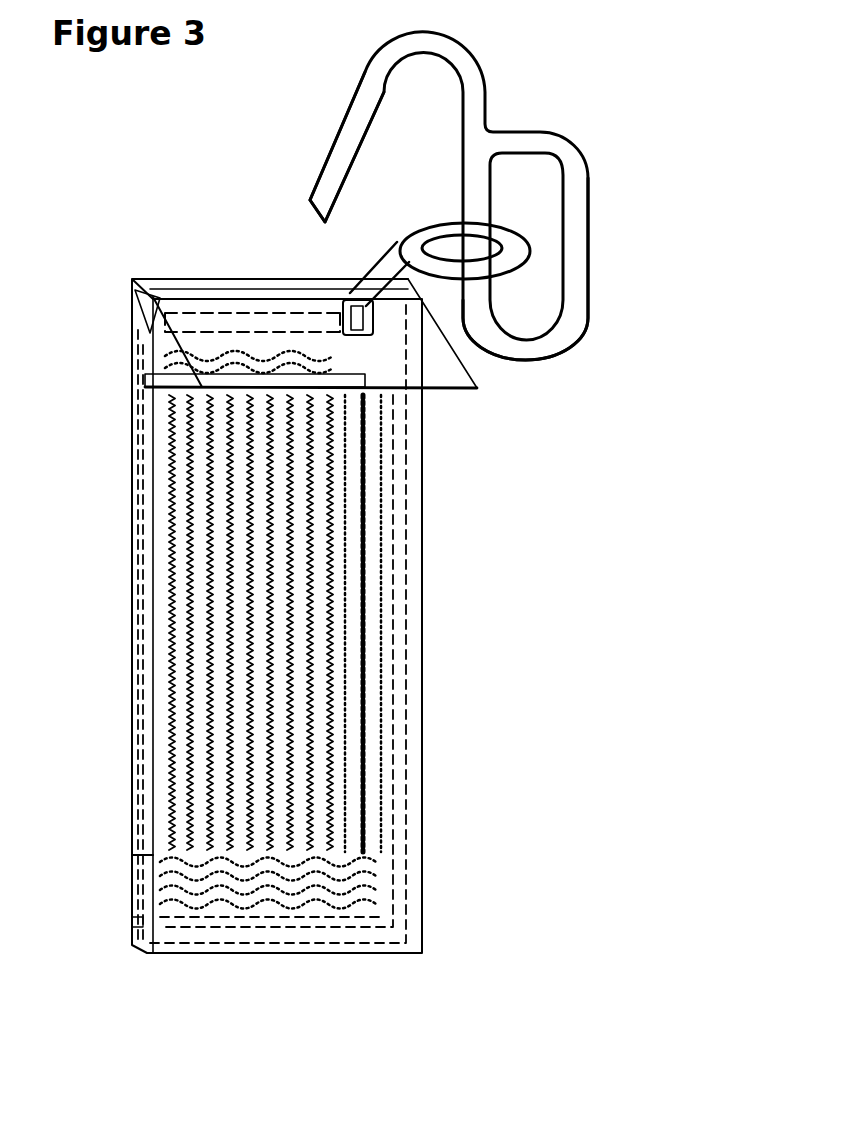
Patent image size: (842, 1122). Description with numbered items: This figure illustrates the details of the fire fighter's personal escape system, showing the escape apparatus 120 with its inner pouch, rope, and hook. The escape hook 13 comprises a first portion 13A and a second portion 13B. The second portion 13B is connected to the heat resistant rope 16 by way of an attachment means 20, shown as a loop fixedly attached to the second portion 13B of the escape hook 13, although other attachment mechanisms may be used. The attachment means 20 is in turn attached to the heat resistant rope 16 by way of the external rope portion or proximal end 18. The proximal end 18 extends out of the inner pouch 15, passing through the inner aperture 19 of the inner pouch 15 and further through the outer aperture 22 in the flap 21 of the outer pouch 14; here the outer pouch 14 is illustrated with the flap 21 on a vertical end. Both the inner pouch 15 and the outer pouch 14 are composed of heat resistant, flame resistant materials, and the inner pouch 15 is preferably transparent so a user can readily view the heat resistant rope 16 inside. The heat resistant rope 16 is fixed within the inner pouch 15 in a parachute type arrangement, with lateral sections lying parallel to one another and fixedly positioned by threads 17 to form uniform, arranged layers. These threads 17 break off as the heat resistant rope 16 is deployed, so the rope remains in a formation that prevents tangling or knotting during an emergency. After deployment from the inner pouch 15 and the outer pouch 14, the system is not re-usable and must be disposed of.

The escape apparatus 120 is at (165, 175).
The escape hook 13 is at (483, 81).
The first portion 13A is at (355, 107).
The second portion 13B is at (572, 338).
The attachment means 20 is at (524, 272).
The proximal end 18 is at (384, 255).
The inner aperture 19 is at (355, 280).
The outer aperture 22 is at (357, 292).
The flap 21 is at (147, 338).
The threads 17 is at (145, 376).
The heat resistant rope 16 is at (375, 568).
The inner pouch 15 is at (402, 815).
The outer pouch 14 is at (422, 922).